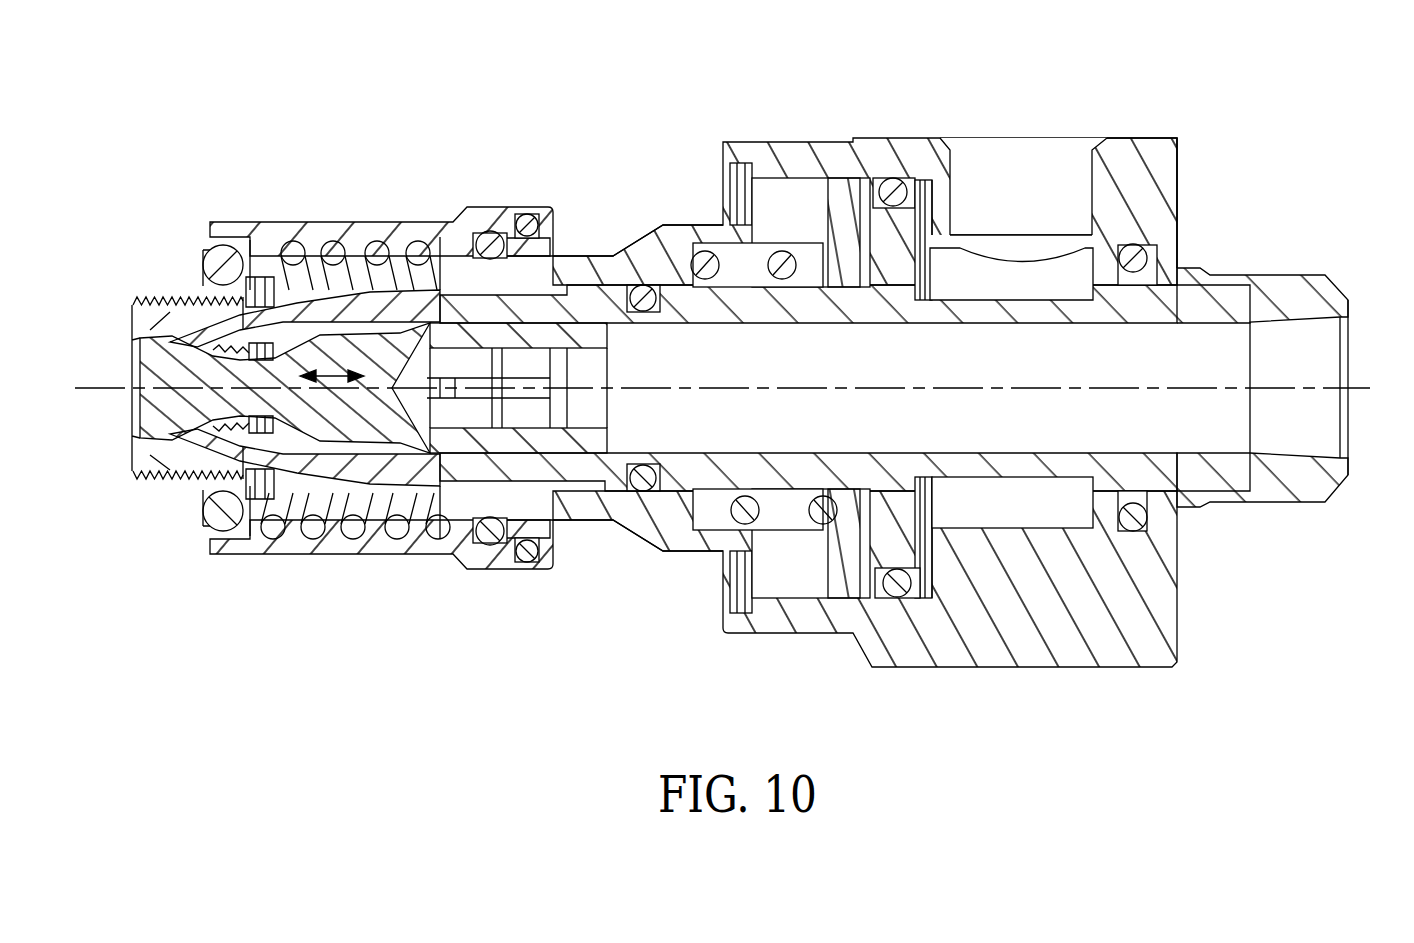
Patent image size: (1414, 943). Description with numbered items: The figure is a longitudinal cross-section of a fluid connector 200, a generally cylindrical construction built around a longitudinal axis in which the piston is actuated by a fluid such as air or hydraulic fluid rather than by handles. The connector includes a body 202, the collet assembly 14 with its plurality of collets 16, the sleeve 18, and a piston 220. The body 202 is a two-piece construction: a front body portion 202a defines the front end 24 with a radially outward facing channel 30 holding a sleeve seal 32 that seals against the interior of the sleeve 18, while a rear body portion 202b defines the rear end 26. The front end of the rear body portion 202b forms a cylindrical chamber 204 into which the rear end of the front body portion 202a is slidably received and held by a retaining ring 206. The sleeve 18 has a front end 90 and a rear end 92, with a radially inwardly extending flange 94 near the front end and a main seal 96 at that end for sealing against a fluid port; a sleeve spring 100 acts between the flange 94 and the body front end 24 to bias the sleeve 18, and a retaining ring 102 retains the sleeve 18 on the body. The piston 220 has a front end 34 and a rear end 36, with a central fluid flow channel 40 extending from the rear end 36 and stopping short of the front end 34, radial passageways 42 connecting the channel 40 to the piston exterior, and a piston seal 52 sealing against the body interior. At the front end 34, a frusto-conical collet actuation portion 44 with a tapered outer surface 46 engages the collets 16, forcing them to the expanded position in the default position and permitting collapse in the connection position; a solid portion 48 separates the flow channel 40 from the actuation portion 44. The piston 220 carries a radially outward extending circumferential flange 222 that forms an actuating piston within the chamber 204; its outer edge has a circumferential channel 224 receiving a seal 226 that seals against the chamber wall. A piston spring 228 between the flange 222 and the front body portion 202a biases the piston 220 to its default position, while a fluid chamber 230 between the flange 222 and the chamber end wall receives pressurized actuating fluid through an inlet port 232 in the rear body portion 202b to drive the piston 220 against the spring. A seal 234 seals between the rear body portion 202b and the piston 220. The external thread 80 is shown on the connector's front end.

The collet assembly 14 is at (330, 486).
The collets 16 is at (148, 315).
The sleeve 18 is at (352, 224).
The front end 24 is at (455, 258).
The rear end 26 is at (1178, 196).
The radially outward facing channel 30 is at (468, 256).
The sleeve seal 32 is at (490, 231).
The front end 34 is at (168, 425).
The rear end 36 is at (1328, 292).
The central fluid flow channel 40 is at (1325, 437).
The radial passageways 42 is at (520, 380).
The collet actuation portion 44 is at (135, 372).
The tapered outer surface 46 is at (172, 332).
The solid portion 48 is at (305, 360).
The piston seal 52 is at (640, 492).
The thread 80 is at (142, 480).
The front end 90 is at (228, 530).
The rear end 92 is at (500, 562).
The radially inwardly extending flange 94 is at (263, 512).
The main seal 96 is at (215, 268).
The sleeve spring 100 is at (330, 246).
The retaining ring 102 is at (528, 214).
The fluid connector 200 is at (1282, 108).
The body 202 is at (895, 138).
The front body portion 202a is at (643, 229).
The rear body portion 202b is at (1140, 138).
The cylindrical chamber 204 is at (843, 212).
The retaining ring 206 is at (733, 185).
The piston 220 is at (1253, 276).
The circumferential flange 222 is at (866, 537).
The circumferential channel 224 is at (875, 545).
The seal 226 is at (898, 597).
The piston spring 228 is at (740, 512).
The fluid chamber 230 is at (935, 500).
The inlet port 232 is at (995, 165).
The seal 234 is at (1144, 518).